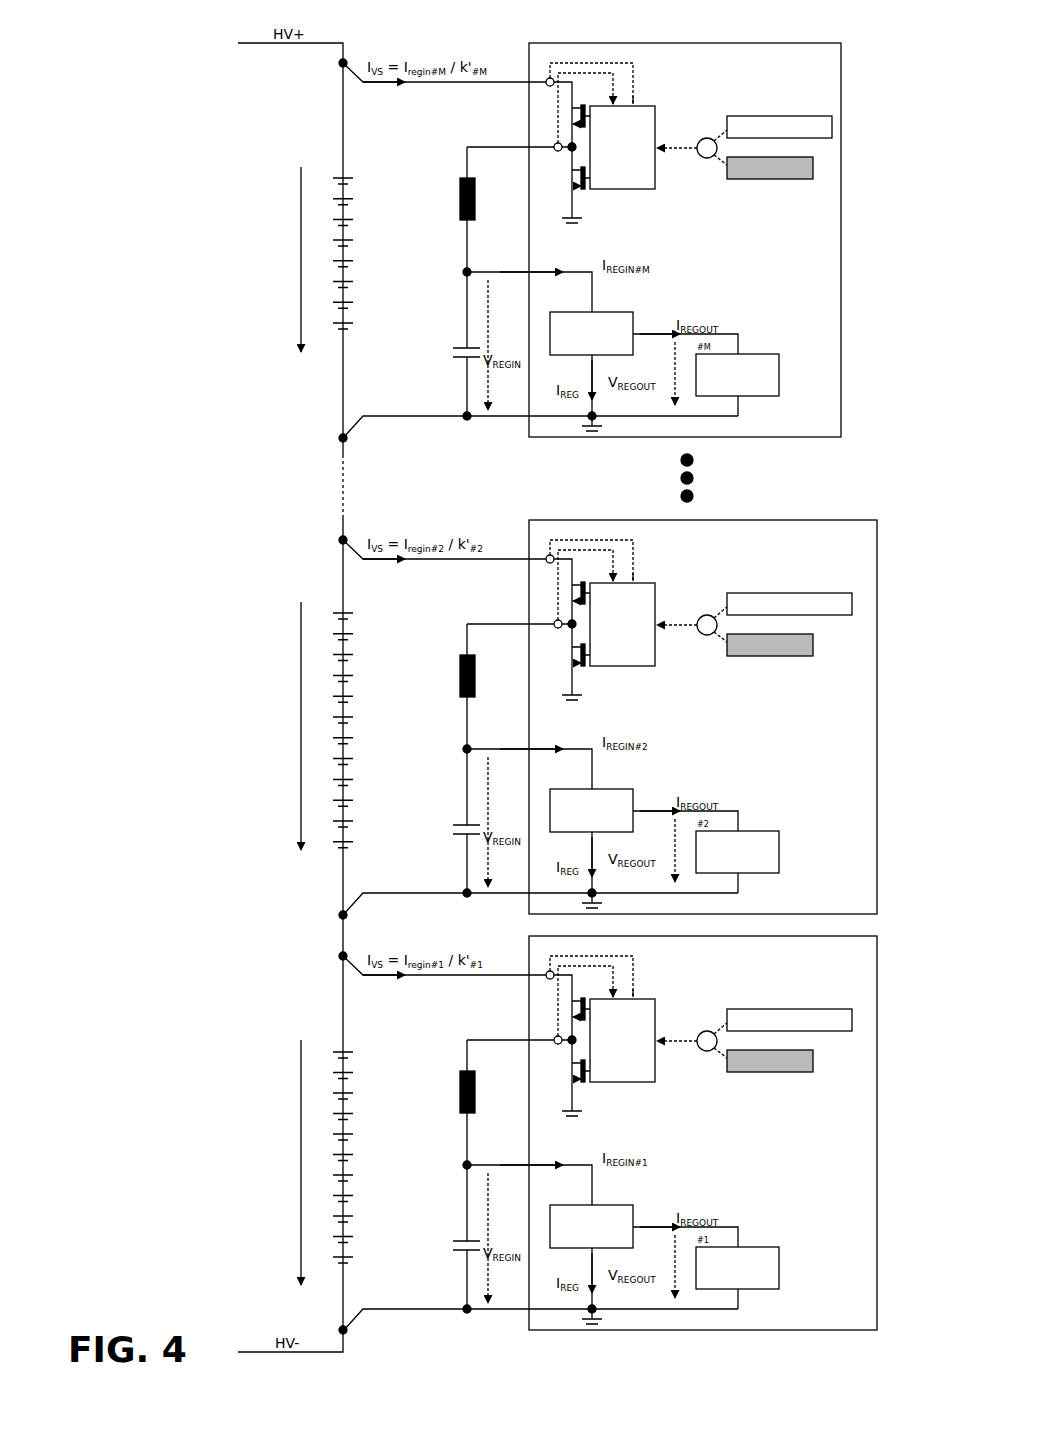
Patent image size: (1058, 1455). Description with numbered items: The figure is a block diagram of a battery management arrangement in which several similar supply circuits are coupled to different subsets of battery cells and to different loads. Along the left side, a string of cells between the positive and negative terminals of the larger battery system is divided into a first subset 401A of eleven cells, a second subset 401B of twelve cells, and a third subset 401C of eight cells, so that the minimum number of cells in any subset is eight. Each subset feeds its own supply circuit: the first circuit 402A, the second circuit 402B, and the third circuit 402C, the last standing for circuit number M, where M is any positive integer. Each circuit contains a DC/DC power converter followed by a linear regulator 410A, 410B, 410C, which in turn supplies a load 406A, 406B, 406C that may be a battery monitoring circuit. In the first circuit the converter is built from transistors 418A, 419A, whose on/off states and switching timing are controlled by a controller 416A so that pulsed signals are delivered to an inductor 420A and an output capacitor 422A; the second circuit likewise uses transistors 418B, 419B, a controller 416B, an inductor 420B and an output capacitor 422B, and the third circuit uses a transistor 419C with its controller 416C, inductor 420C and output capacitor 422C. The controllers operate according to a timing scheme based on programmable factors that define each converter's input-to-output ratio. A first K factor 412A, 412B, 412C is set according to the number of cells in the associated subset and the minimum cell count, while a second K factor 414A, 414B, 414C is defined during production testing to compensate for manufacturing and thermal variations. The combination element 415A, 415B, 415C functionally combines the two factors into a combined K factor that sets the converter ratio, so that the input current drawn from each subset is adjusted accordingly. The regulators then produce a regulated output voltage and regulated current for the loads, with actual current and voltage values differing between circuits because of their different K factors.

The subset of battery cells 401C is at (366, 217).
The subset of battery cells 401B is at (313, 726).
The subset of battery cells 401A is at (313, 1162).
The third circuit 402C is at (508, 44).
The second circuit 402B is at (637, 698).
The first circuit 402A is at (645, 1122).
The load 406C is at (748, 354).
The load 406B is at (776, 845).
The load 406A is at (783, 1260).
The linear regulator 410C is at (633, 312).
The linear regulator 410B is at (654, 795).
The linear regulator 410A is at (654, 1209).
The first K factor 412C is at (778, 116).
The first K factor 412B is at (789, 581).
The first K factor 412A is at (789, 997).
The second K factor 414C is at (781, 179).
The second K factor 414B is at (787, 667).
The second K factor 414A is at (786, 1082).
The combination element 415C is at (707, 138).
The combination element 415B is at (698, 595).
The combination element 415A is at (697, 1011).
The controller 416C is at (630, 189).
The controller 416B is at (654, 637).
The controller 416A is at (655, 1053).
The transistor 418B is at (490, 599).
The transistor 418A is at (490, 1015).
The transistor 419C is at (577, 118).
The transistor 419B is at (540, 668).
The transistor 419A is at (540, 1084).
The inductor 420C is at (462, 180).
The inductor 420B is at (418, 724).
The inductor 420A is at (418, 1140).
The output capacitor 422C is at (460, 348).
The output capacitor 422B is at (426, 840).
The output capacitor 422A is at (426, 1256).